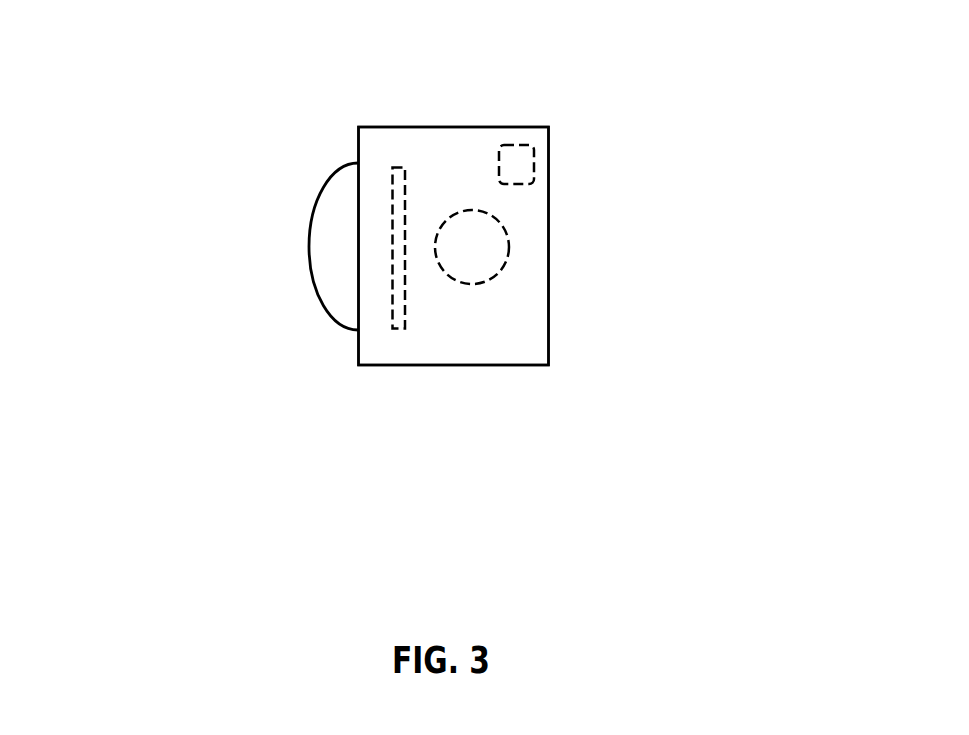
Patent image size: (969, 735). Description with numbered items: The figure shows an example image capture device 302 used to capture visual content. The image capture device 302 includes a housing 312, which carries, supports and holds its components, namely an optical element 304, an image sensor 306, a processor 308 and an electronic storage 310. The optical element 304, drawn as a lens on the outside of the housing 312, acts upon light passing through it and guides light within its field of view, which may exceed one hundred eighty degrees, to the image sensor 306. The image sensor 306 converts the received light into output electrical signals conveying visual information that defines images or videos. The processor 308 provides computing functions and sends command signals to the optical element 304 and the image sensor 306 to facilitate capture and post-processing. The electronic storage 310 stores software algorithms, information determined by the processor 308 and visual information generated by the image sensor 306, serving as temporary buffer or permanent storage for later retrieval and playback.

The image capture device 302 is at (244, 141).
The optical element 304 is at (322, 302).
The image sensor 306 is at (398, 164).
The processor 308 is at (478, 283).
The electronic storage 310 is at (534, 168).
The housing 312 is at (477, 365).